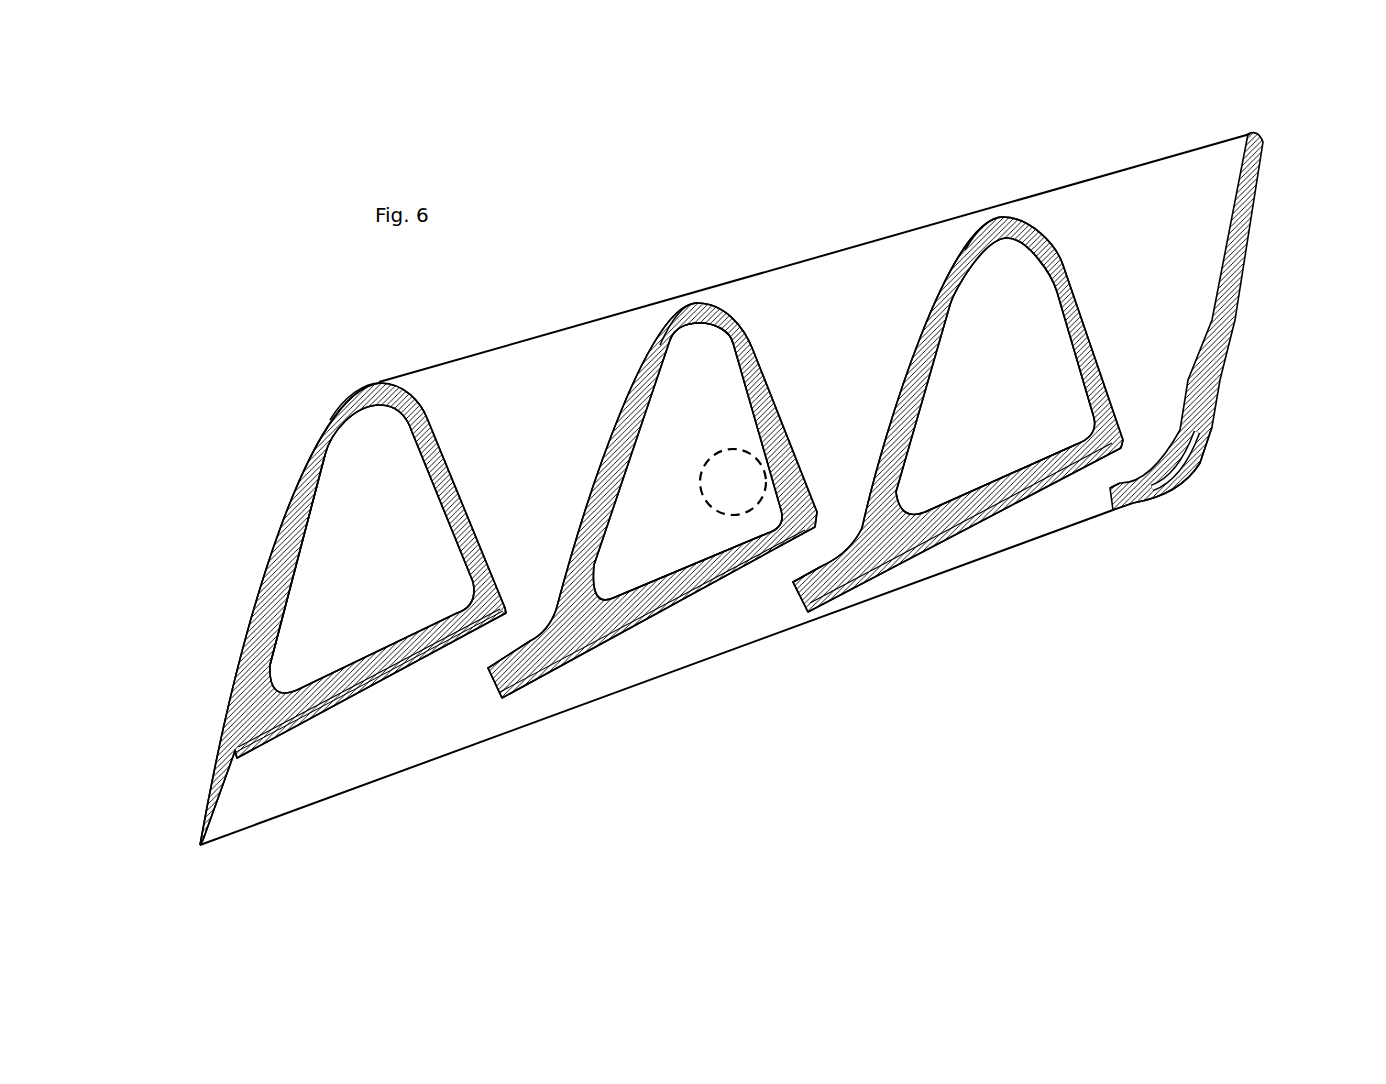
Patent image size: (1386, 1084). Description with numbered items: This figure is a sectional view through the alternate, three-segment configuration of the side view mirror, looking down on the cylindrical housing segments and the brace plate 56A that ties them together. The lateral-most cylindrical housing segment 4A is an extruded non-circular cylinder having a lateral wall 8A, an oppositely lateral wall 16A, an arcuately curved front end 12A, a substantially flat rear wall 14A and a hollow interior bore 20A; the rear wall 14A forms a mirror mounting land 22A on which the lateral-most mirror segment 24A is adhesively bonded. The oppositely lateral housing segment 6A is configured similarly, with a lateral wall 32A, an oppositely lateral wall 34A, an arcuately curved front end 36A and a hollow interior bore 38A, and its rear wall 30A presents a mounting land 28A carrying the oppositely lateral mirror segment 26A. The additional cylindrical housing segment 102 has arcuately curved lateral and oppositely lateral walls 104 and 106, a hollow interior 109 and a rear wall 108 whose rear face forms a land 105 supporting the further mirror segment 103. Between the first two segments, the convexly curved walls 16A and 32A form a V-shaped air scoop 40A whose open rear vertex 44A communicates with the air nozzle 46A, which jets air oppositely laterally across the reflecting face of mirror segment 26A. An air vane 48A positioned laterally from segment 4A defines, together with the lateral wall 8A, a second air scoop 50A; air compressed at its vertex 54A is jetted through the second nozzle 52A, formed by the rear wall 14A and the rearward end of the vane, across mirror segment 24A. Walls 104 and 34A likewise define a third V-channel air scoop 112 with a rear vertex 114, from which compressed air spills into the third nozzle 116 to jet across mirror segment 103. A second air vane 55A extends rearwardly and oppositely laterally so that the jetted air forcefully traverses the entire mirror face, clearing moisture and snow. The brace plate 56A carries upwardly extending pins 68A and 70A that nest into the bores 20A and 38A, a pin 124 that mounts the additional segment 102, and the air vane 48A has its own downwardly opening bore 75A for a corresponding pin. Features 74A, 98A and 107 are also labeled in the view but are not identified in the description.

The lateral-most cylindrical housing segment 4A is at (918, 288).
The oppositely lateral cylindrical housing segment 6A is at (598, 398).
The lateral wall 8A is at (1063, 292).
The arcuately curved front end 12A is at (998, 214).
The rear wall 14A is at (840, 480).
The oppositely lateral wall 16A is at (945, 285).
The hollow interior bore 20A is at (985, 405).
The mirror mounting land 22A is at (992, 508).
The lateral-most mirror segment 24A is at (957, 533).
The oppositely lateral mirror segment 26A is at (600, 653).
The mounting land 28A is at (645, 617).
The rear wall 30A is at (683, 577).
The lateral wall 32A is at (757, 365).
The oppositely lateral wall 34A is at (637, 382).
The arcuately curved front end 36A is at (695, 292).
The hollow interior bore 38A is at (625, 529).
The V valley shaped air scoop 40A is at (843, 305).
The open rear vertex 44A is at (920, 543).
The air nozzle 46A is at (755, 633).
The air vane 48A is at (1238, 307).
The second air scoop 50A is at (1150, 220).
The second air nozzle 52A is at (1110, 470).
The vertex 54A is at (1145, 410).
The second air vane 55A is at (225, 812).
The brace plate 56A is at (795, 565).
The pin 68A is at (1010, 437).
The pin 70A is at (697, 390).
The bottom flange 74A is at (1188, 478).
The hollow bore 75A is at (1207, 460).
The fastener location 98A is at (740, 487).
The additional cylindrical housing segment 102 is at (262, 505).
The second other oppositely lateral mirror segment 103 is at (417, 662).
The lateral wall 104 is at (440, 462).
The land 105 is at (362, 685).
The oppositely lateral wall 106 is at (265, 605).
The top wall 107 is at (370, 380).
The rear wall 108 is at (325, 690).
The hollow interior 109 is at (353, 565).
The third V channel air scoop 112 is at (517, 365).
The rear vertex 114 is at (523, 570).
The third air nozzle 116 is at (493, 642).
The pin 124 is at (355, 490).